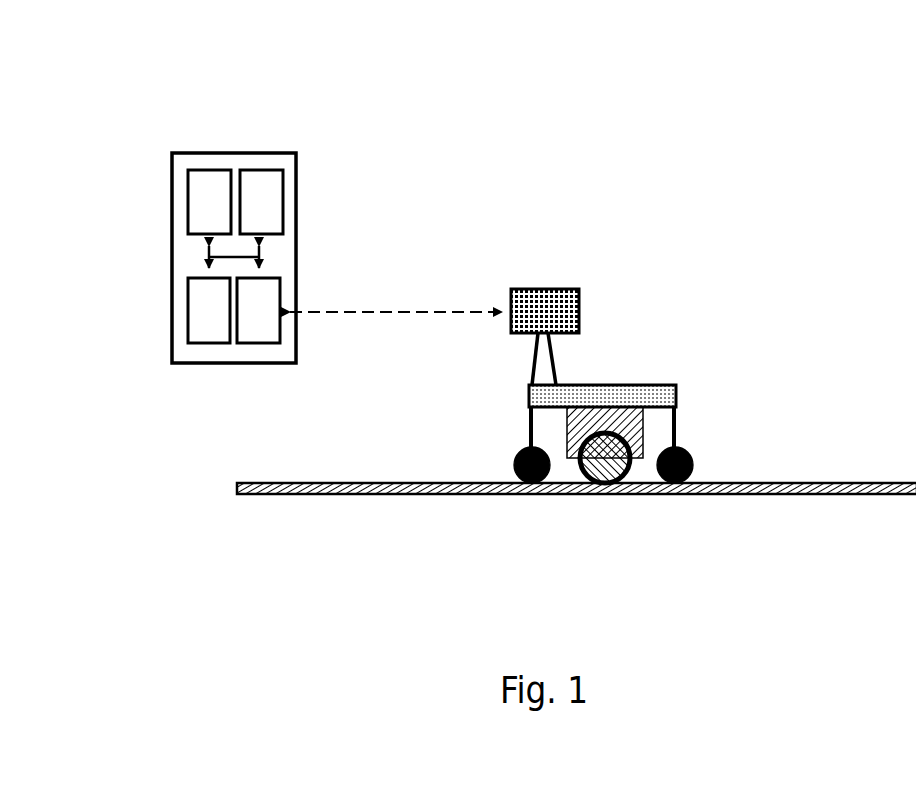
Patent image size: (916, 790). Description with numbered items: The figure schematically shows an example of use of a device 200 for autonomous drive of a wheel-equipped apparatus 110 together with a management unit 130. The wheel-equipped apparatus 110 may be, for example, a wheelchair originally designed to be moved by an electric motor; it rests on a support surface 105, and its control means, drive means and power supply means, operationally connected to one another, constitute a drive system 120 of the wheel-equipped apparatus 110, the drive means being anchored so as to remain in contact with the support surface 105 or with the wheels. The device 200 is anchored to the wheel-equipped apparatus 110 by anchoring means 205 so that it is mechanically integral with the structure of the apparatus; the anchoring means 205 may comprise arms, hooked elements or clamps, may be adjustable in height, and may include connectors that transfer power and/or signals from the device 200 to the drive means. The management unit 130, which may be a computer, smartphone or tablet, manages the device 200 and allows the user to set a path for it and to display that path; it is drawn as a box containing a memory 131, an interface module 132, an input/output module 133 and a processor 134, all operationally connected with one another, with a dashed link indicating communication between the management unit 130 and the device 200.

The support surface 105 is at (263, 495).
The wheel-equipped apparatus 110 is at (676, 386).
The drive system 120 is at (630, 455).
The management unit 130 is at (242, 152).
The memory 131 is at (188, 331).
The interface module 132 is at (260, 344).
The input/output module 133 is at (188, 210).
The processor 134 is at (283, 200).
The device for autonomous drive 200 is at (543, 265).
The anchoring means 205 is at (538, 352).